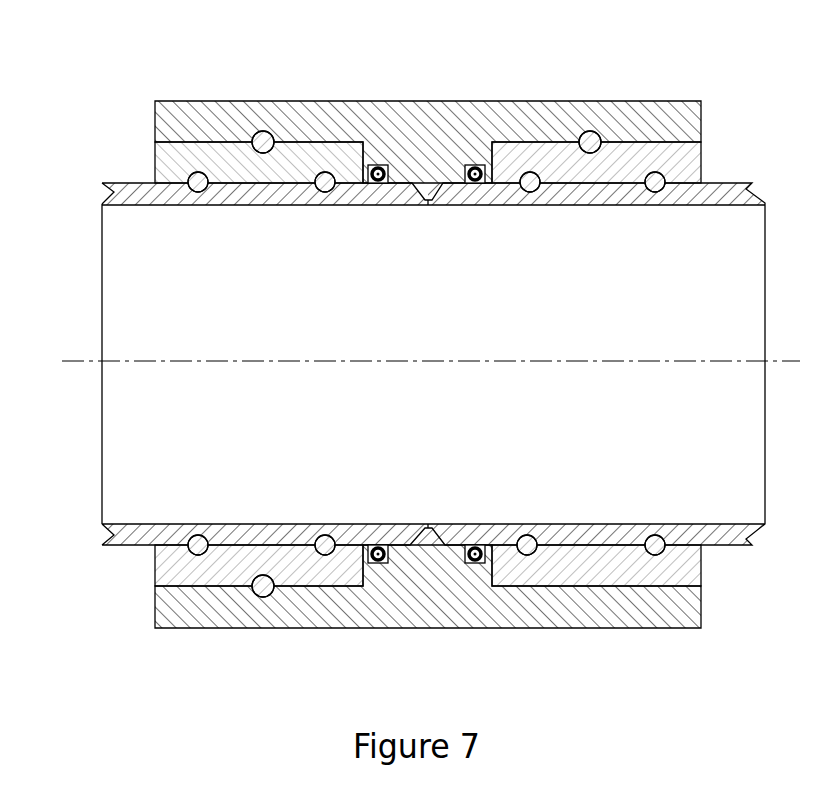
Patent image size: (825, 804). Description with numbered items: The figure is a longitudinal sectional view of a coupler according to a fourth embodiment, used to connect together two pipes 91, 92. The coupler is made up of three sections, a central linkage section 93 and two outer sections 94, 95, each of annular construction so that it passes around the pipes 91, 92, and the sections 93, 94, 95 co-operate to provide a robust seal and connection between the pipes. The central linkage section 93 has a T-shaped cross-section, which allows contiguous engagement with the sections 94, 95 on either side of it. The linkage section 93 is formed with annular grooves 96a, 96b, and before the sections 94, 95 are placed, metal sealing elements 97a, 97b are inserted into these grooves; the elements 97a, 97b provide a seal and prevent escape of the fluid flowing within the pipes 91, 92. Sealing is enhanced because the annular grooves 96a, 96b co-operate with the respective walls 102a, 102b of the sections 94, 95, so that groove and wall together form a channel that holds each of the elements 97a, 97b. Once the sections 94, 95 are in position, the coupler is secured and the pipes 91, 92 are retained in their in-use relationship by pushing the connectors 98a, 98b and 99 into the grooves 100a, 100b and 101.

The pipe 91 is at (113, 184).
The pipe 92 is at (738, 183).
The central linkage section 93 is at (670, 101).
The section 94 is at (702, 163).
The section 95 is at (153, 155).
The annular groove 96a is at (375, 166).
The annular groove 96b is at (479, 166).
The metal sealing element 97a is at (370, 165).
The metal sealing element 97b is at (486, 166).
The connector 98a is at (531, 172).
The connector 98b is at (664, 176).
The connector 99 is at (594, 131).
The groove 100a is at (197, 193).
The groove 100b is at (322, 194).
The groove 101 is at (264, 131).
The wall 102a is at (368, 563).
The wall 102b is at (484, 563).